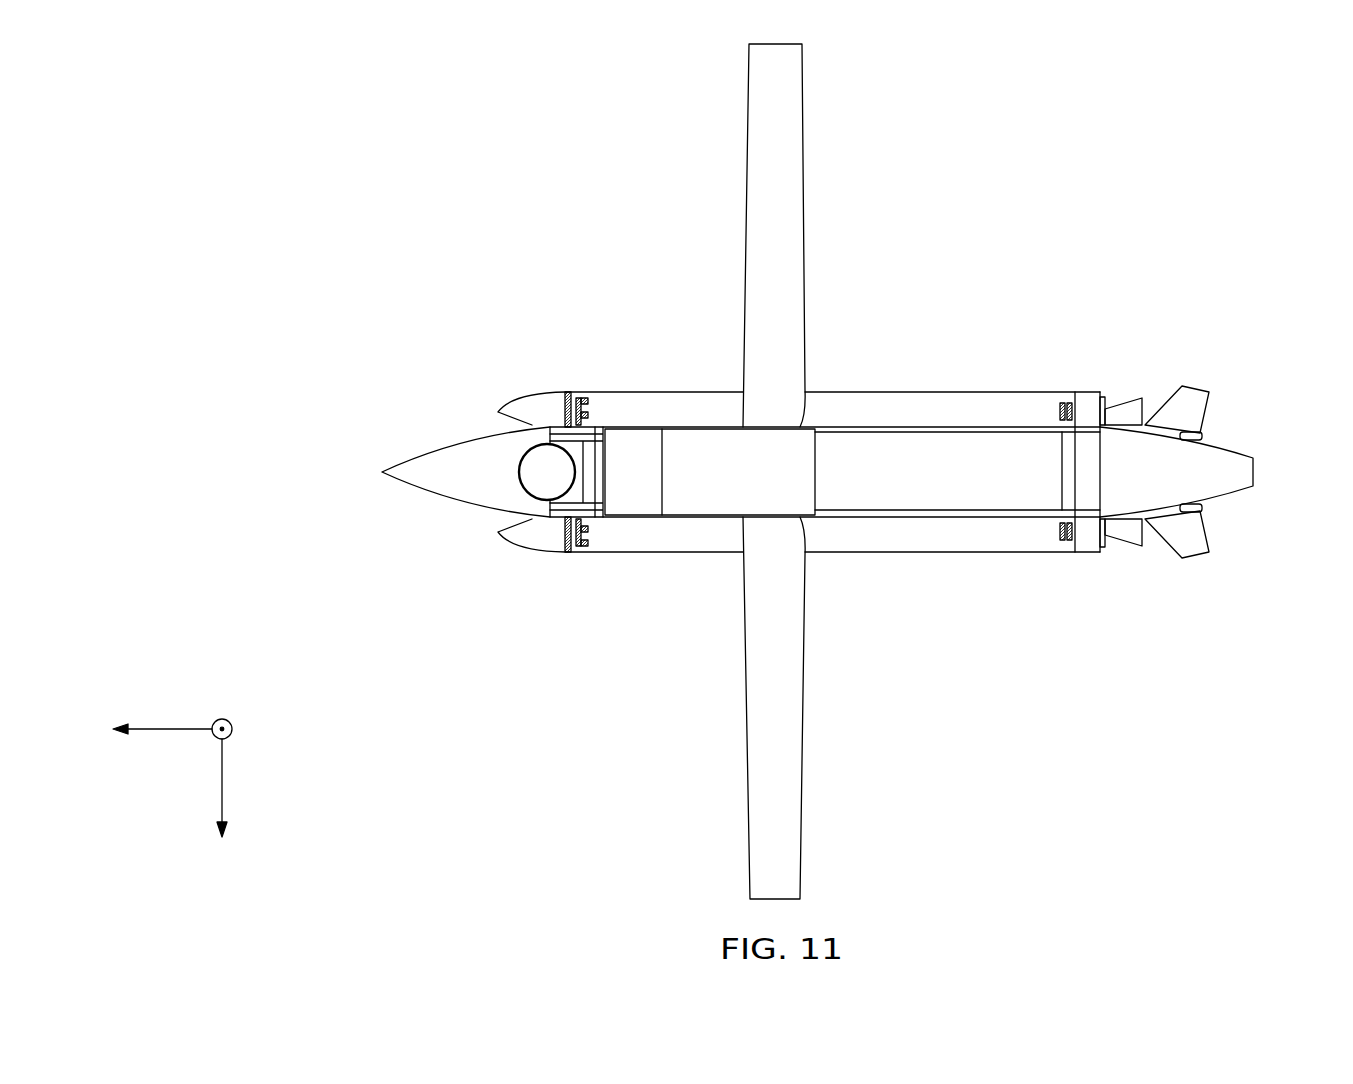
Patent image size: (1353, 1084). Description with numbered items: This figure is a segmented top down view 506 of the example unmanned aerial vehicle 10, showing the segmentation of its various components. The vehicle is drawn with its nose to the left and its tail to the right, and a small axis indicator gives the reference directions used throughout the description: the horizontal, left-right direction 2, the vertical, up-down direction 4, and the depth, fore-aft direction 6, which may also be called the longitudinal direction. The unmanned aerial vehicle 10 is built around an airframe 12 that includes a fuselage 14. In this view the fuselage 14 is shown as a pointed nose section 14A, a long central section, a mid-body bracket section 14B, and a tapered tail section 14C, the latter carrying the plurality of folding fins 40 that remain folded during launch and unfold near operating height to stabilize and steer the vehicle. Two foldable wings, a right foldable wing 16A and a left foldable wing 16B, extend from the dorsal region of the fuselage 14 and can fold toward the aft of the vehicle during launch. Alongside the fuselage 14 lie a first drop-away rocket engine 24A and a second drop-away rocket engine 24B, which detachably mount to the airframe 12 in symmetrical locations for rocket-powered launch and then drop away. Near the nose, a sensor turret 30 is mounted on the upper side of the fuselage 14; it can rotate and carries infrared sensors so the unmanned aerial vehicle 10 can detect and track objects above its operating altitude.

The segmented top down view 506 is at (160, 133).
The unmanned aerial vehicle 10 is at (394, 223).
The airframe 12 is at (587, 354).
The fuselage 14 is at (414, 519).
The nose section 14A is at (472, 437).
The aft bracket section 14B is at (1010, 430).
The tail section 14C is at (1227, 493).
The right foldable wing 16A is at (802, 175).
The left foldable wing 16B is at (803, 718).
The first drop-away rocket engine 24A is at (880, 392).
The second drop-away rocket engine 24B is at (900, 553).
The sensor turret 30 is at (575, 488).
The folding fins 40 is at (1207, 400).
The horizontal direction 2 is at (222, 776).
The vertical direction 4 is at (225, 718).
The depth direction 6 is at (180, 728).